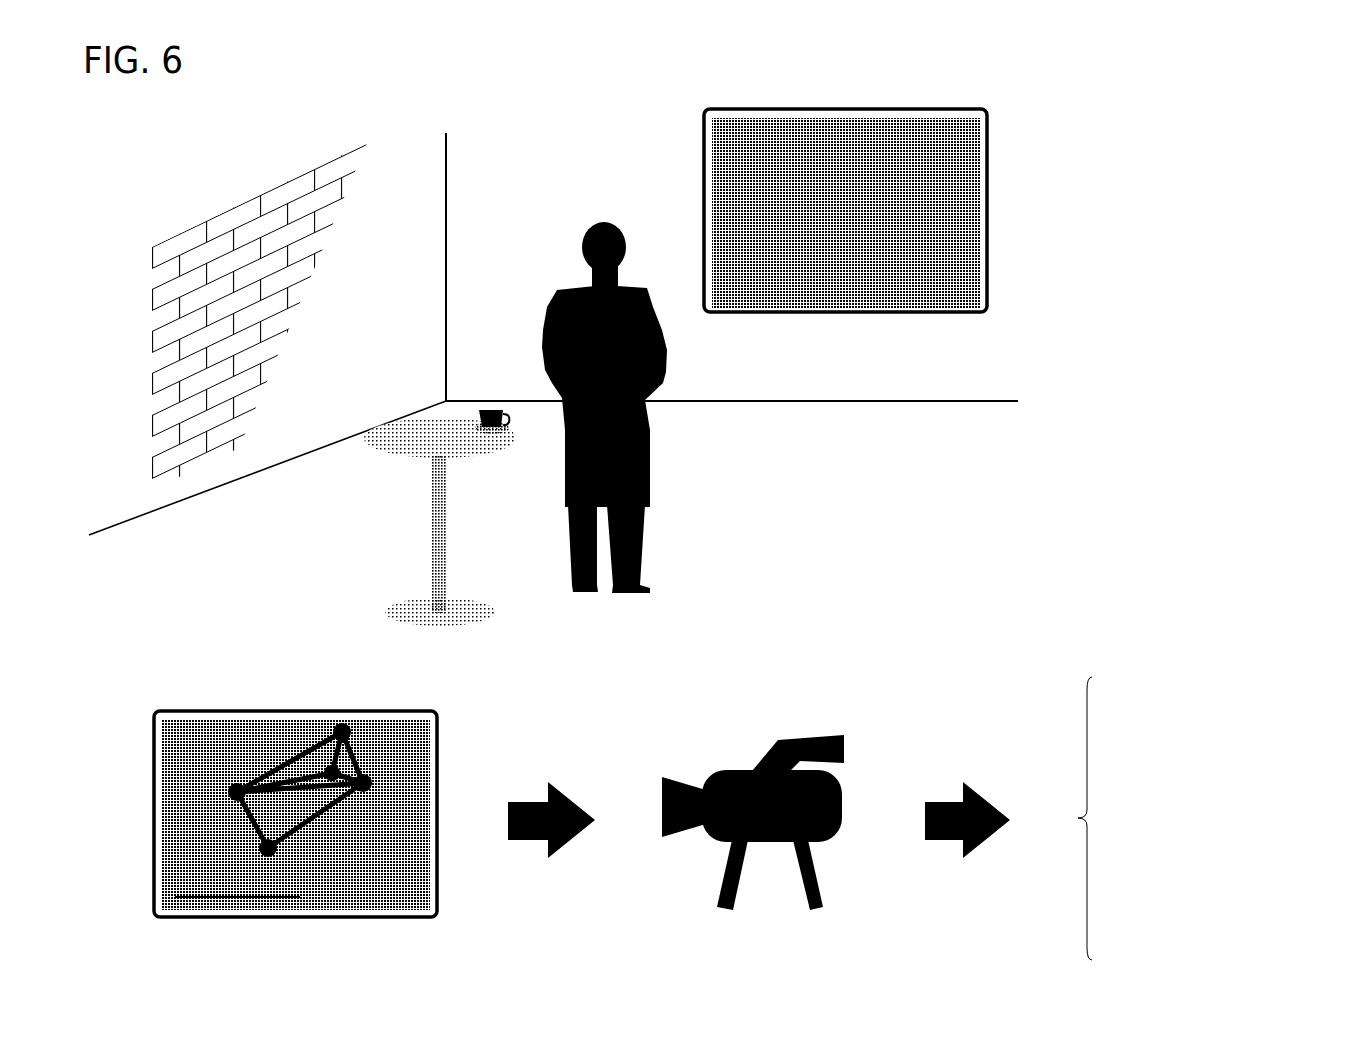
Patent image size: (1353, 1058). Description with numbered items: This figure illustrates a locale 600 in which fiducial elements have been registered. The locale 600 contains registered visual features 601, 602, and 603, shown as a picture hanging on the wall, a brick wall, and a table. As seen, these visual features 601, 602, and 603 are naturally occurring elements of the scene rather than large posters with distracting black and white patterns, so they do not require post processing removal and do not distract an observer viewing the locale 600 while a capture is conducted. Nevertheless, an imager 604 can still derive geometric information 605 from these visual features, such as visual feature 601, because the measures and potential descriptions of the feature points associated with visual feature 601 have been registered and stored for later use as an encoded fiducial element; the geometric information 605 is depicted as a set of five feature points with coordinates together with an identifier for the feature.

The locale 600 is at (516, 159).
The visual feature 601 is at (992, 192).
The visual feature 602 is at (285, 305).
The visual feature 603 is at (408, 440).
The imager 604 is at (783, 674).
The geometric information 605 is at (1238, 671).